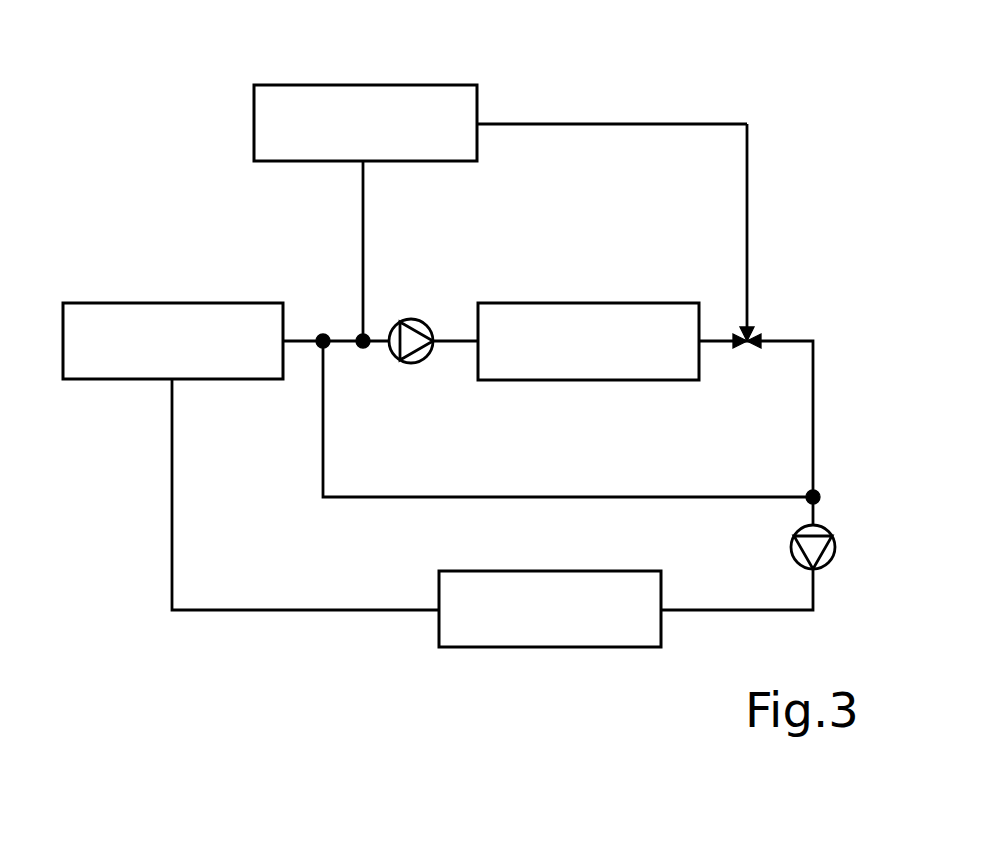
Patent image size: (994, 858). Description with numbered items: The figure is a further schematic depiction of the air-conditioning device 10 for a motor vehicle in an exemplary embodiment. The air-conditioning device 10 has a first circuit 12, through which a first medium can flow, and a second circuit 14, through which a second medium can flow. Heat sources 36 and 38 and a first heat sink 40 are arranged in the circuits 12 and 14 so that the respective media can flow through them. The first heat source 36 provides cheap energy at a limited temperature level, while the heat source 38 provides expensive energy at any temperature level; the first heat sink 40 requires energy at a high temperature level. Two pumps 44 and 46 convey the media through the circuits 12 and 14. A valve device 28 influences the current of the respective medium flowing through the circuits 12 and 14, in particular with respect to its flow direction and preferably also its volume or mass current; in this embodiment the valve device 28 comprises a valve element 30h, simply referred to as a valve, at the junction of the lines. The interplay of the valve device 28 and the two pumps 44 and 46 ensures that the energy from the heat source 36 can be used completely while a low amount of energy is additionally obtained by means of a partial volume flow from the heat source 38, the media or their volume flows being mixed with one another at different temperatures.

The air-conditioning device 10 is at (677, 63).
The first circuit 12 is at (802, 184).
The second circuit 14 is at (773, 100).
The valve device 28 is at (809, 286).
The valve port 30h is at (771, 326).
The first heat source 36 is at (176, 303).
The heat source 38 is at (607, 303).
The first heat sink 40 is at (397, 85).
The pump 44 is at (412, 363).
The pump 46 is at (828, 528).